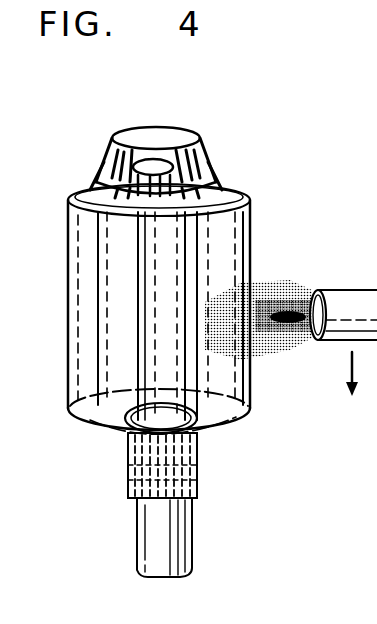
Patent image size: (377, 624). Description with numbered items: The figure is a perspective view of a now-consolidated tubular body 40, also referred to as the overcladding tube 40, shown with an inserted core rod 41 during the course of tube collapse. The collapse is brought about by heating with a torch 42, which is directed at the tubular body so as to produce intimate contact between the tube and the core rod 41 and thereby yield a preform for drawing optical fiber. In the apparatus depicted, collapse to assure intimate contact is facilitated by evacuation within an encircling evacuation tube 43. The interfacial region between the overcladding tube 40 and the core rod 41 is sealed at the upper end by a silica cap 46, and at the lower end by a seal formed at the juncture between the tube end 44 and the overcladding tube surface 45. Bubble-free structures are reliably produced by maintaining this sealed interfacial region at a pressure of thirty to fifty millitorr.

The tubular body 40 is at (250, 223).
The core rod 41 is at (143, 253).
The torch 42 is at (363, 290).
The evacuation tube 43 is at (130, 495).
The tube end 44 is at (128, 410).
The overcladding tube surface 45 is at (222, 418).
The silica cap 46 is at (178, 128).